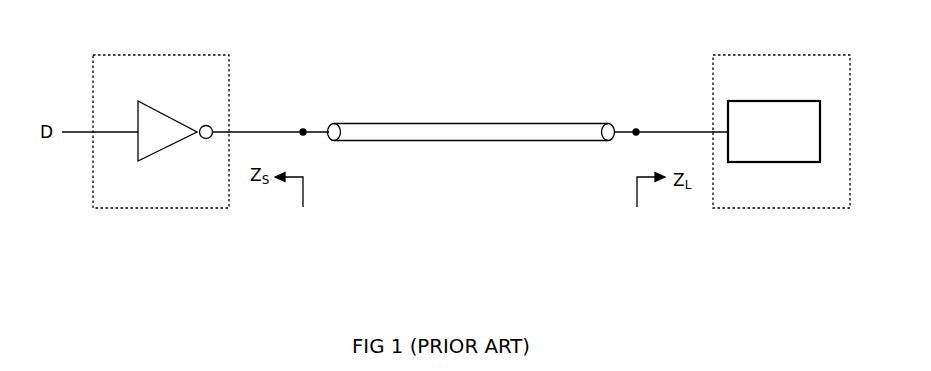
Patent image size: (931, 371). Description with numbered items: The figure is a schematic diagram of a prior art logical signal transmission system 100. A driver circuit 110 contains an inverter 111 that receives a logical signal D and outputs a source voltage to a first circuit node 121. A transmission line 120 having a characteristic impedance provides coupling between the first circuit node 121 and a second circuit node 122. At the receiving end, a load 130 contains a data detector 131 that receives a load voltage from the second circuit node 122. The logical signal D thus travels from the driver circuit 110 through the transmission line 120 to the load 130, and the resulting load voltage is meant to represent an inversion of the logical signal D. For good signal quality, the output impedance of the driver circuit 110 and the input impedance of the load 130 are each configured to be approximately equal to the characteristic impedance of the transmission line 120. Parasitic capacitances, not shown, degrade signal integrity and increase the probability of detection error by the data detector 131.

The logical signal transmission system 100 is at (179, 246).
The driver circuit 110 is at (168, 55).
The inverter 111 is at (170, 114).
The transmission line 120 is at (460, 123).
The first circuit node 121 is at (302, 136).
The second circuit node 122 is at (636, 136).
The load 130 is at (788, 55).
The data detector 131 is at (800, 101).